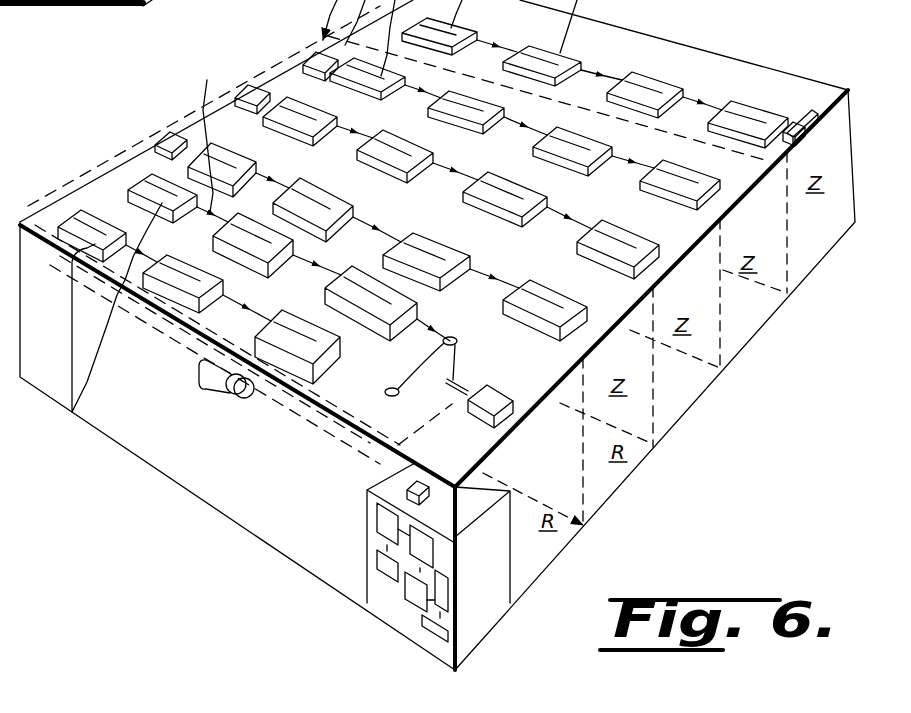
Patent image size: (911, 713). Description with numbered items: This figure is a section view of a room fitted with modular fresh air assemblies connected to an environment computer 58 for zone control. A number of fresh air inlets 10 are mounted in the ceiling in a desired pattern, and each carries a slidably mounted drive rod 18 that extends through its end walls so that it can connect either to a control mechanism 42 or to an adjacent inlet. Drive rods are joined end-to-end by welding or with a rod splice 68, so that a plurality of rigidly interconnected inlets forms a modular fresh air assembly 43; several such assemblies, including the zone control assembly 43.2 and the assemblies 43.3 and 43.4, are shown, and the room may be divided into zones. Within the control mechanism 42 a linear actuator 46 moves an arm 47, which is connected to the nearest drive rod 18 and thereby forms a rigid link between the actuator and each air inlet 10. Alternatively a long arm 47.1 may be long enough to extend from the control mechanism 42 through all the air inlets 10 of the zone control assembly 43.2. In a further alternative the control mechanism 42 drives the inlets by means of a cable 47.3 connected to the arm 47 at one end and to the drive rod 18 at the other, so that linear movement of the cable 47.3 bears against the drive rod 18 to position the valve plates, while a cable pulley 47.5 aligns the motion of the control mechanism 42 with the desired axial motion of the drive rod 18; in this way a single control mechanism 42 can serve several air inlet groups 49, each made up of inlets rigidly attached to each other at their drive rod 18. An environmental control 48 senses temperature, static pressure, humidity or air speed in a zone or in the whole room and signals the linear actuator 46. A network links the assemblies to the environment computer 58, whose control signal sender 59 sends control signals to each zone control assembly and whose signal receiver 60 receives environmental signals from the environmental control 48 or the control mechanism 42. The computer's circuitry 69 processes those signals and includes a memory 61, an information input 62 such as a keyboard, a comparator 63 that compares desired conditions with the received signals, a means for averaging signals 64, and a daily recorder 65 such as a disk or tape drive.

The fresh air inlet 10 is at (283, 128).
The drive rod 18 is at (472, 282).
The control mechanism 42 is at (170, 135).
The modular fresh air assembly 43 is at (458, 398).
The zone control assembly 43.2 is at (250, 80).
The modular fresh air assembly 43.3 is at (176, 122).
The modular fresh air assembly 43.4 is at (97, 211).
The linear actuator 46 is at (803, 110).
The arm 47 is at (512, 450).
The long arm 47.1 is at (572, 250).
The cable 47.3 is at (457, 342).
The cable pulley 47.5 is at (388, 397).
The environmental control 48 is at (245, 397).
The air inlet group 49 is at (72, 412).
The environment computer 58 is at (470, 643).
The control signal sender 59 is at (448, 592).
The signal receiver 60 is at (438, 494).
The memory 61 is at (436, 548).
The information input 62 is at (380, 524).
The comparator 63 is at (418, 594).
The means for averaging signals 64 is at (385, 569).
The daily recorder 65 is at (440, 627).
The rod splice 68 is at (209, 134).
The circuitry 69 is at (378, 589).